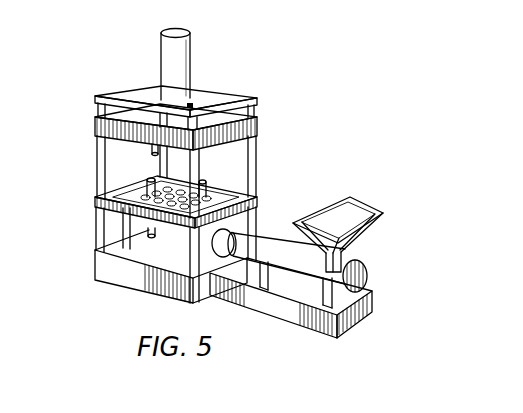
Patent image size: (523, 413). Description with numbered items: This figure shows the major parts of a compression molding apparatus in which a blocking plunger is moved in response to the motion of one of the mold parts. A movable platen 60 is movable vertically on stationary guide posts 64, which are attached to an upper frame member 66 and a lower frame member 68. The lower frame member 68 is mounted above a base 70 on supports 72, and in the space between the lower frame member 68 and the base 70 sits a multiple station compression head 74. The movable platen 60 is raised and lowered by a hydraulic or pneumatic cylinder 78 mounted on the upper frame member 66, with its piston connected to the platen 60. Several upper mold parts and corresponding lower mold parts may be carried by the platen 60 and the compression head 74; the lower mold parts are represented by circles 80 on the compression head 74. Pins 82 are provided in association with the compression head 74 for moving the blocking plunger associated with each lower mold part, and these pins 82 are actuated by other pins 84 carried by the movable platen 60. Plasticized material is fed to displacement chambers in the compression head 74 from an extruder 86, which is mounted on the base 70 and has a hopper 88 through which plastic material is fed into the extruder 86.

The movable platen 60 is at (258, 122).
The stationary guide posts 64 is at (257, 159).
The upper frame member 66 is at (257, 100).
The lower frame member 68 is at (258, 205).
The base 70 is at (118, 272).
The supports 72 is at (95, 240).
The multiple station compression head 74 is at (124, 222).
The hydraulic or pneumatic cylinder 78 is at (188, 56).
The circles representing lower mold parts 80 is at (205, 197).
The pins 82 is at (150, 189).
The pins 84 is at (152, 148).
The extruder 86 is at (273, 238).
The hopper 88 is at (373, 218).